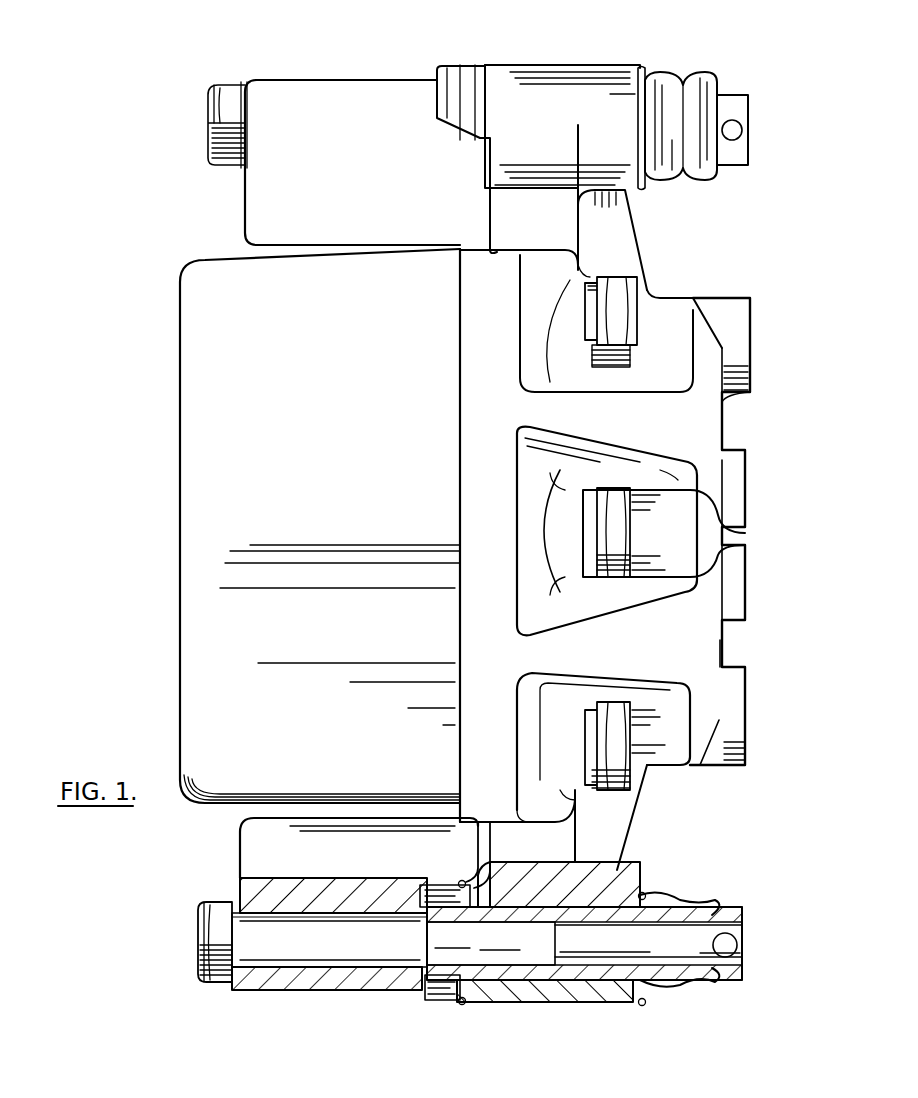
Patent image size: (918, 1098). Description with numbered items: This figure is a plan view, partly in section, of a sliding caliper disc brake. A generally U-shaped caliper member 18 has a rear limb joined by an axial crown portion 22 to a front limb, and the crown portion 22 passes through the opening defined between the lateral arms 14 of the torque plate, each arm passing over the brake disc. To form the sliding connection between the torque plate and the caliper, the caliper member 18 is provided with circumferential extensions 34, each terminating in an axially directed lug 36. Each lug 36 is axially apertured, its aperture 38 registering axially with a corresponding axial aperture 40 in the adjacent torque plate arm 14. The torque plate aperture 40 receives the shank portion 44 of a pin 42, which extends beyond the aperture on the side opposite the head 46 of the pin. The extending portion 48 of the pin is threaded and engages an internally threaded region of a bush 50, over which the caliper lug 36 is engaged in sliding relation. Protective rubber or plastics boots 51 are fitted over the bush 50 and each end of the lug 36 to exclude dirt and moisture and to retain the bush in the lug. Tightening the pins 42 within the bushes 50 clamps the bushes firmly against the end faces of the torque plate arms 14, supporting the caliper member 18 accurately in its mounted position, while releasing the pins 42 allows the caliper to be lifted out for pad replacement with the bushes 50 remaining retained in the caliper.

The torque plate arm 14 is at (345, 95).
The caliper member 18 is at (774, 731).
The crown portion 22 is at (320, 486).
The circumferential extension 34 is at (568, 222).
The lug 36 is at (580, 96).
The aperture 38 is at (560, 990).
The axial aperture 40 is at (275, 972).
The pin 42 is at (186, 928).
The shank portion 44 is at (337, 950).
The head 46 is at (212, 965).
The threaded portion 48 is at (488, 950).
The bush 50 is at (728, 975).
The boot 51 is at (430, 885).